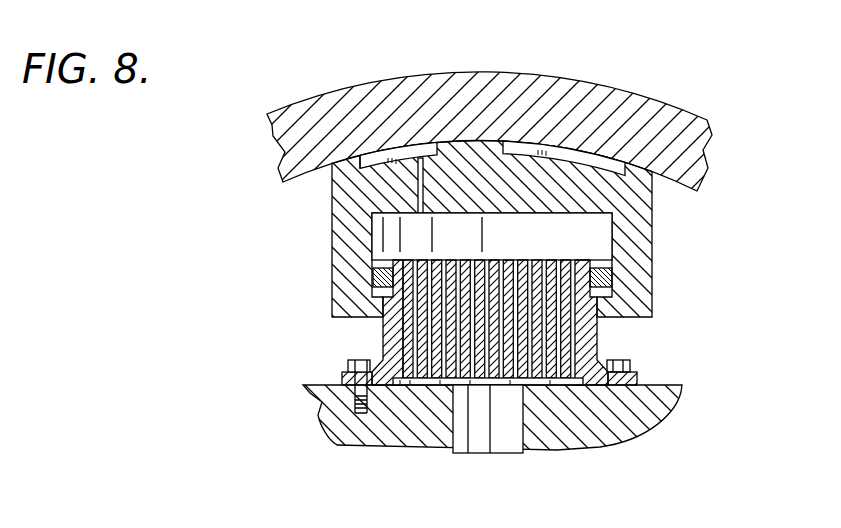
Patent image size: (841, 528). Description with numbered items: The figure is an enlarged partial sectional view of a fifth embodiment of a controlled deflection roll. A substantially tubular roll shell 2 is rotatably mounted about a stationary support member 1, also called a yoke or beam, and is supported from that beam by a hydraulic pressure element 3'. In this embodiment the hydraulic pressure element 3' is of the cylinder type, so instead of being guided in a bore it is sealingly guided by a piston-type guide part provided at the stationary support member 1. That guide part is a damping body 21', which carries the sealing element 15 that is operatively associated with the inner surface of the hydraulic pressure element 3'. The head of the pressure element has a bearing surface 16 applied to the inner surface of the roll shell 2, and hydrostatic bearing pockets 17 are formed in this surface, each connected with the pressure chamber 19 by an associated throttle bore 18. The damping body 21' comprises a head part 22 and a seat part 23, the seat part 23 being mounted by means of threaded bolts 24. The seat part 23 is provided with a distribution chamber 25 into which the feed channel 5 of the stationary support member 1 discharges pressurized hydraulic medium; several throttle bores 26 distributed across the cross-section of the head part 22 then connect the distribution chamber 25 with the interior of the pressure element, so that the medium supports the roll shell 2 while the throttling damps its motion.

The stationary support member 1 is at (337, 443).
The tubular roll shell 2 is at (680, 112).
The hydraulic pressure element 3' is at (517, 229).
The feed channel 5 is at (503, 448).
The sealing element 15 is at (614, 278).
The bearing surface 16 is at (357, 157).
The hydrostatic bearing pockets 17 is at (410, 157).
The throttle bore 18 is at (430, 163).
The pressure chamber 19 is at (594, 229).
The damping body 21' is at (350, 322).
The head part 22 is at (597, 335).
The seat part 23 is at (341, 373).
The threaded bolts 24 is at (352, 398).
The distribution chamber 25 is at (433, 381).
The throttle bores 26 is at (519, 259).